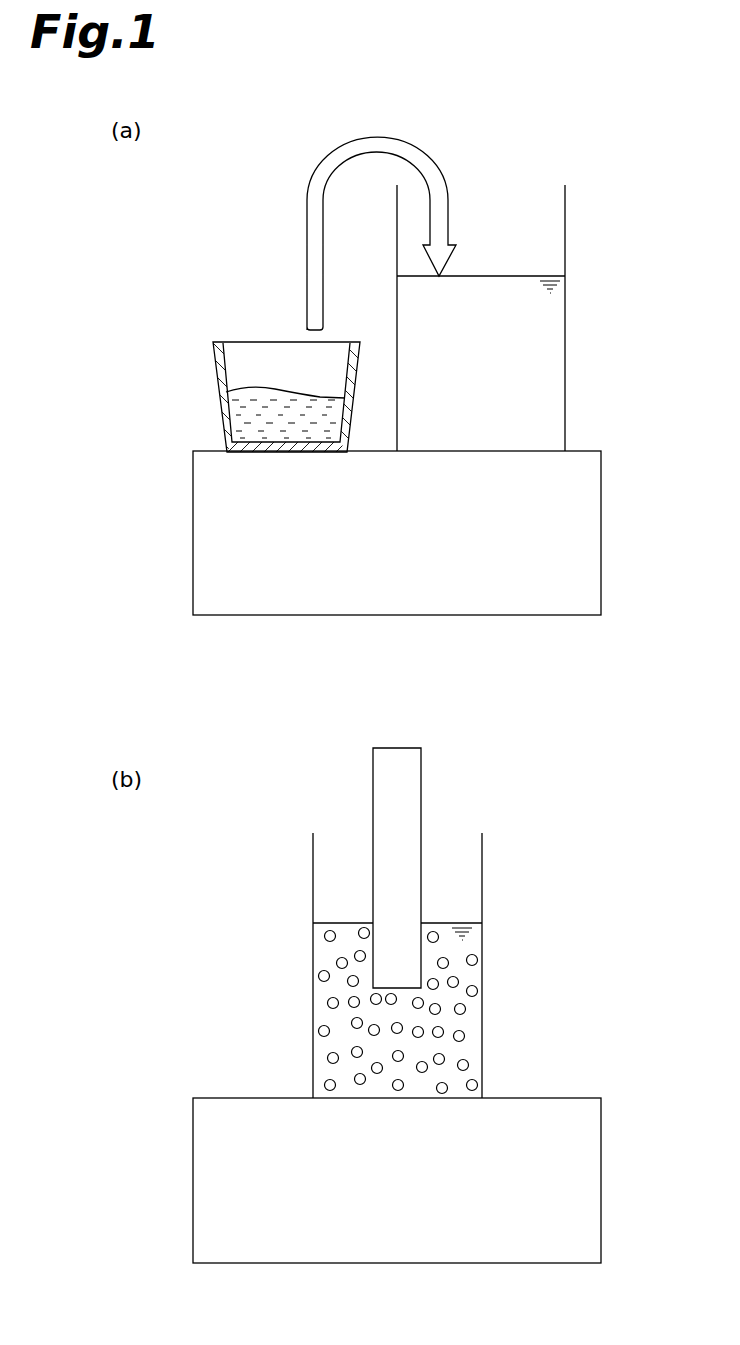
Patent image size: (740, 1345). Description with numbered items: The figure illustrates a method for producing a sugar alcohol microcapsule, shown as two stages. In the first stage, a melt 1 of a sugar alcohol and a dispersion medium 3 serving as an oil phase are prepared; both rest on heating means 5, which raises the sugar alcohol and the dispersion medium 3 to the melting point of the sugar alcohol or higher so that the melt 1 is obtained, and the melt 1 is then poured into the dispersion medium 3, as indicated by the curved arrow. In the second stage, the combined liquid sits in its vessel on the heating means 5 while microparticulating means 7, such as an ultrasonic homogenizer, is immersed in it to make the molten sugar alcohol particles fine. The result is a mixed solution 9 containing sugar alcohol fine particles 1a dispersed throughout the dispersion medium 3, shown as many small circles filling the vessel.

The melt 1 is at (290, 407).
The sugar alcohol fine particles 1a is at (466, 1008).
The dispersion medium 3 is at (551, 370).
The heating means 5 is at (587, 537).
The microparticulating means 7 is at (410, 768).
The mixed solution 9 is at (549, 990).